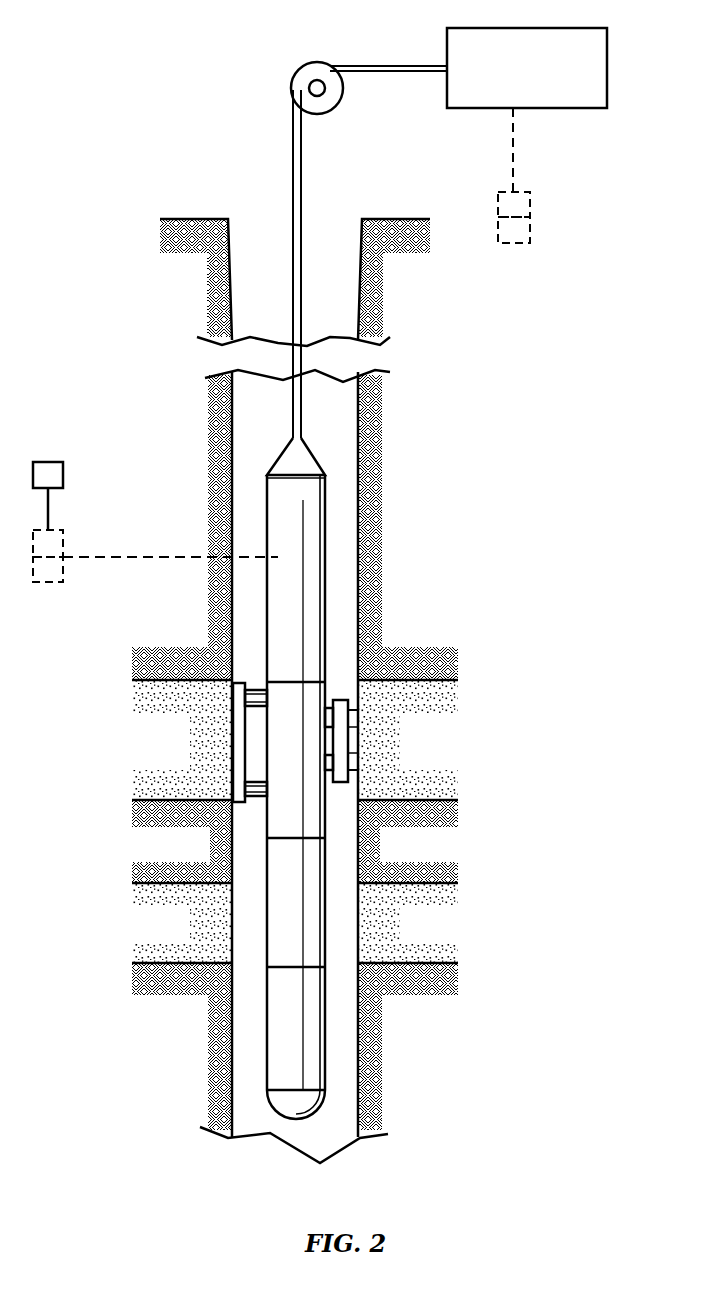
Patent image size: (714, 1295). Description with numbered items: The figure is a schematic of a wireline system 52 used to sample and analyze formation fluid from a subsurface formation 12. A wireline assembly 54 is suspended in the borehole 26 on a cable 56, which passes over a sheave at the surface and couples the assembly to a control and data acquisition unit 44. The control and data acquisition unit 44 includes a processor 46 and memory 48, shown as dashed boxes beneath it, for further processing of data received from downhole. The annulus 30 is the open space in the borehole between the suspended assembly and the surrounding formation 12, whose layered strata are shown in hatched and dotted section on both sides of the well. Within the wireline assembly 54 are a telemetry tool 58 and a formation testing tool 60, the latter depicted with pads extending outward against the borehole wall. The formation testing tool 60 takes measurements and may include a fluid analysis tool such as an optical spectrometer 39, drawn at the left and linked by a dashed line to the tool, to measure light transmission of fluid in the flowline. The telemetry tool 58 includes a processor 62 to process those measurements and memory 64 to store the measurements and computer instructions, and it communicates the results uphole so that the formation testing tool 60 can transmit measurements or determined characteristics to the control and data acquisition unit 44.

The formation 12 is at (532, 688).
The borehole 26 is at (228, 428).
The annulus 30 is at (331, 232).
The optical spectrometer 39 is at (58, 462).
The control and data acquisition unit 44 is at (548, 28).
The processor 46 is at (530, 200).
The memory 48 is at (530, 240).
The wireline system 52 is at (210, 48).
The wireline assembly 54 is at (334, 522).
The cable 56 is at (291, 240).
The telemetry tool 58 is at (326, 612).
The formation testing tool 60 is at (325, 812).
The processor 62 is at (63, 545).
The memory 64 is at (45, 582).